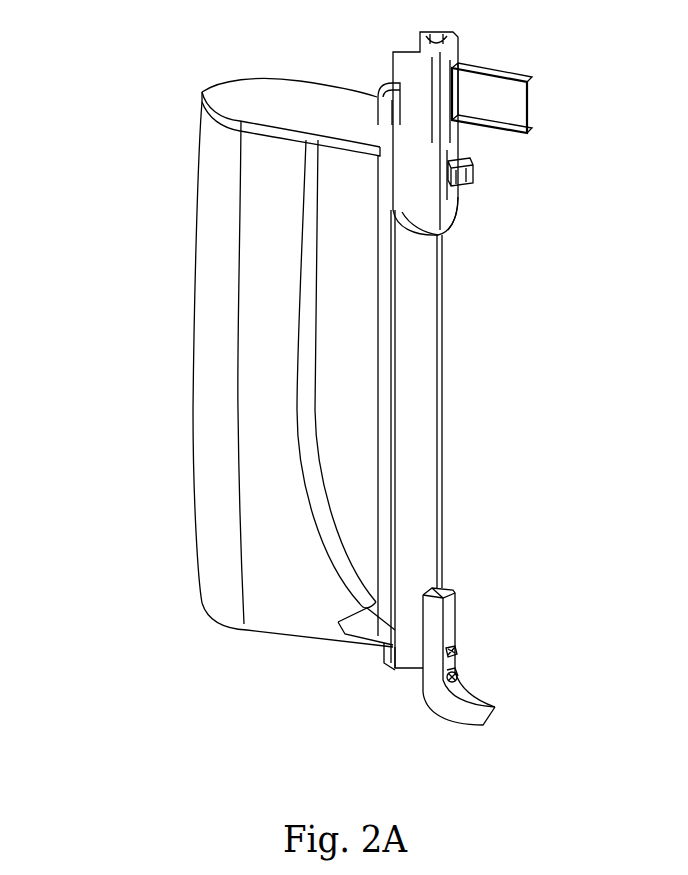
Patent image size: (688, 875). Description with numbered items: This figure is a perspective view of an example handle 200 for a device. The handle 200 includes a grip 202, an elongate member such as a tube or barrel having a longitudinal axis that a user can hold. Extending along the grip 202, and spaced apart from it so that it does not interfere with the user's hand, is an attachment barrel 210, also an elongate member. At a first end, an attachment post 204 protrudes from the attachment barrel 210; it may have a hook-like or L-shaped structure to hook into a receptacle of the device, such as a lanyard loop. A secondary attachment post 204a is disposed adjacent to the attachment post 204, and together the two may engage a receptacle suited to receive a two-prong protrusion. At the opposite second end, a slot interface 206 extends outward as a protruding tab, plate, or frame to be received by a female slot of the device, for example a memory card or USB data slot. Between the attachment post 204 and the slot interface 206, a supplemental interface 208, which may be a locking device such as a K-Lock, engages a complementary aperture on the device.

The handle 200 is at (104, 74).
The grip 202 is at (223, 388).
The attachment post 204 is at (457, 649).
The secondary attachment post 204a is at (458, 678).
The slot interface 206 is at (513, 93).
The supplemental interface 208 is at (475, 180).
The attachment barrel 210 is at (423, 352).